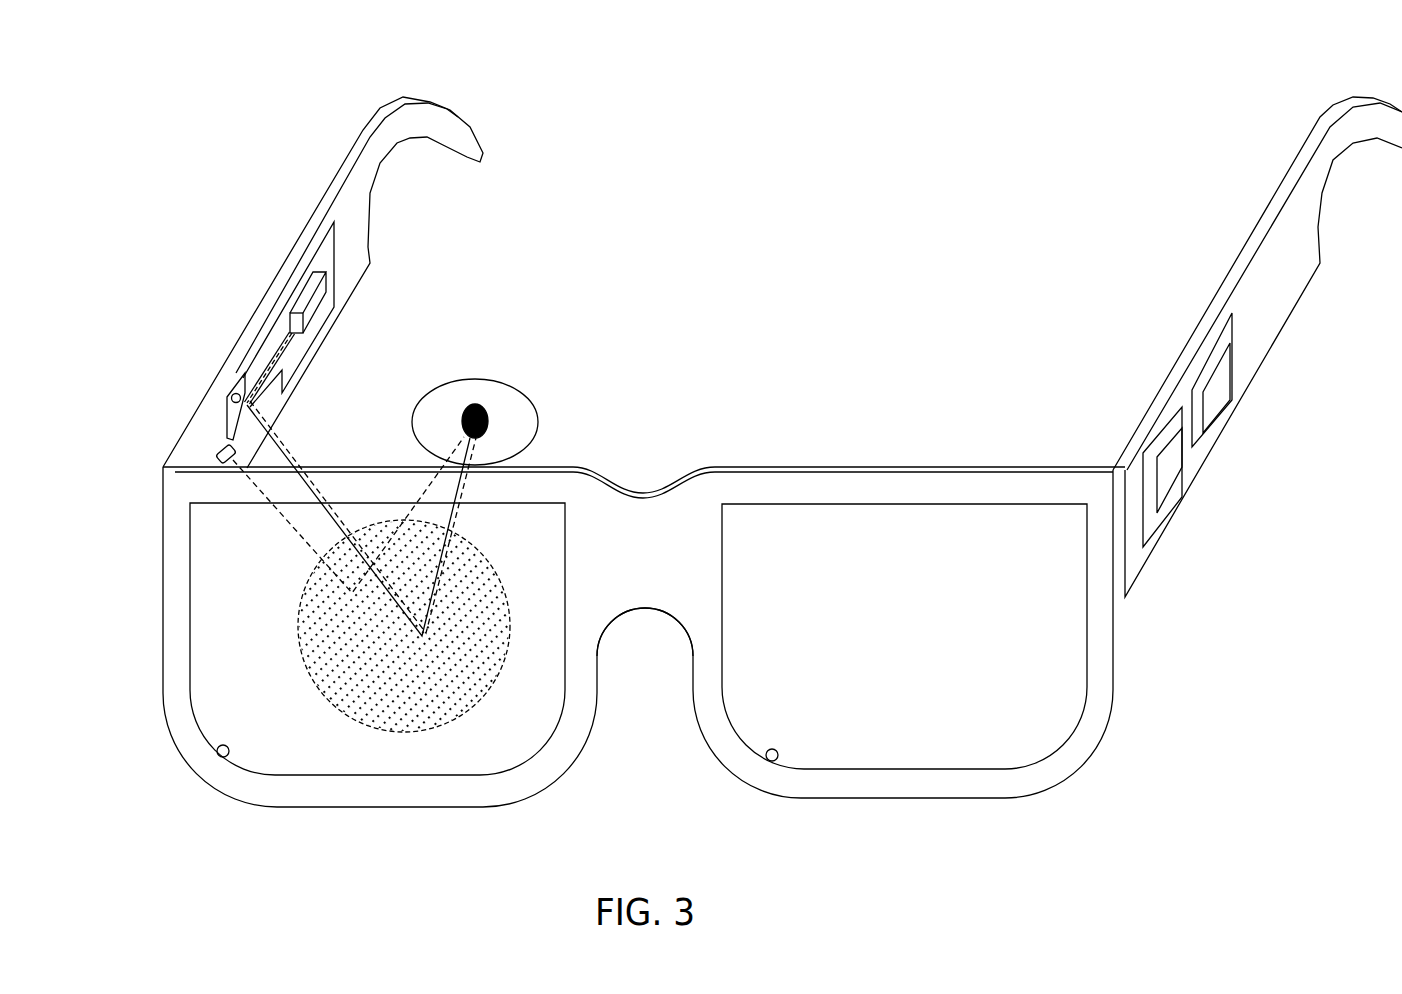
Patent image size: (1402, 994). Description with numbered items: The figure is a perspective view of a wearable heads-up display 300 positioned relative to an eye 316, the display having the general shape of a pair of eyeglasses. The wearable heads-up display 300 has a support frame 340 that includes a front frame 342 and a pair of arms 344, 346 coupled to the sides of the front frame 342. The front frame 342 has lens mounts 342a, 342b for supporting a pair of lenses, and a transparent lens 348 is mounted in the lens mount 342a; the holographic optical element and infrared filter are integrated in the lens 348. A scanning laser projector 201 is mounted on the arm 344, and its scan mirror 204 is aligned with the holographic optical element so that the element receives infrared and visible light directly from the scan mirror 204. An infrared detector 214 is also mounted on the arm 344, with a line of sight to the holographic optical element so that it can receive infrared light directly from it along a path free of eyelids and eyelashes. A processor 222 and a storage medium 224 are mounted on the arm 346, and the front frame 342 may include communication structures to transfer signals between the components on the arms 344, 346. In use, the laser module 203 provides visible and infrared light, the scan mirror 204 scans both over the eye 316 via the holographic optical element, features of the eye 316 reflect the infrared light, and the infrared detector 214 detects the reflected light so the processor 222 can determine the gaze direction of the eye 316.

The wearable heads-up display 300 is at (719, 128).
The support frame 340 is at (843, 467).
The front frame 342 is at (640, 515).
The lens mount 342a is at (228, 756).
The lens mount 342b is at (772, 761).
The arm 344 is at (368, 137).
The arm 346 is at (1317, 145).
The transparent lens 348 is at (302, 757).
The scanning laser projector 201 is at (263, 333).
The laser module 203 is at (299, 327).
The scan mirror 204 is at (231, 393).
The infrared detector 214 is at (216, 452).
The processor 222 is at (1167, 470).
The storage medium 224 is at (1207, 403).
The eye 316 is at (492, 388).